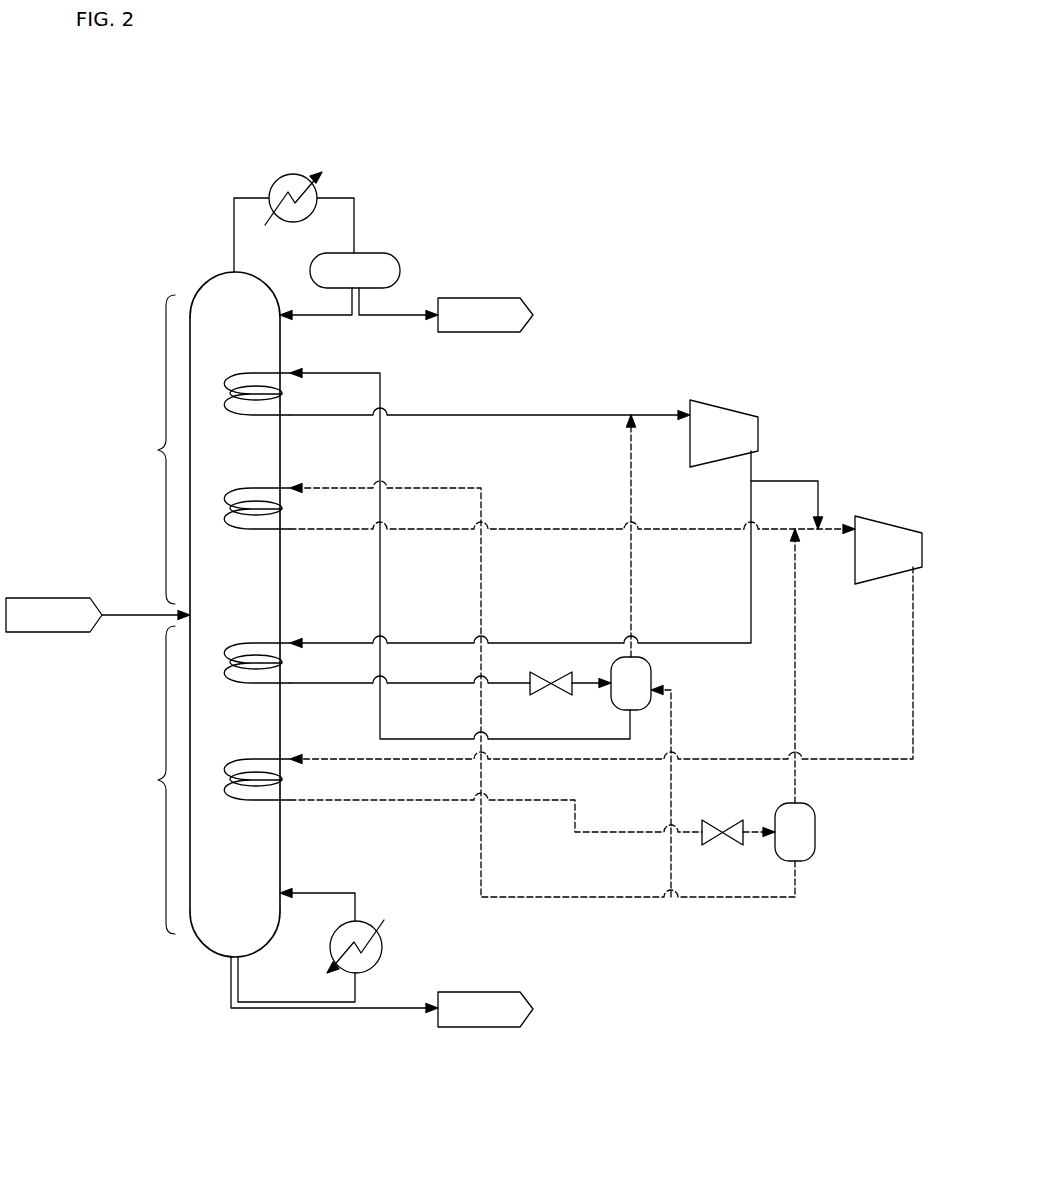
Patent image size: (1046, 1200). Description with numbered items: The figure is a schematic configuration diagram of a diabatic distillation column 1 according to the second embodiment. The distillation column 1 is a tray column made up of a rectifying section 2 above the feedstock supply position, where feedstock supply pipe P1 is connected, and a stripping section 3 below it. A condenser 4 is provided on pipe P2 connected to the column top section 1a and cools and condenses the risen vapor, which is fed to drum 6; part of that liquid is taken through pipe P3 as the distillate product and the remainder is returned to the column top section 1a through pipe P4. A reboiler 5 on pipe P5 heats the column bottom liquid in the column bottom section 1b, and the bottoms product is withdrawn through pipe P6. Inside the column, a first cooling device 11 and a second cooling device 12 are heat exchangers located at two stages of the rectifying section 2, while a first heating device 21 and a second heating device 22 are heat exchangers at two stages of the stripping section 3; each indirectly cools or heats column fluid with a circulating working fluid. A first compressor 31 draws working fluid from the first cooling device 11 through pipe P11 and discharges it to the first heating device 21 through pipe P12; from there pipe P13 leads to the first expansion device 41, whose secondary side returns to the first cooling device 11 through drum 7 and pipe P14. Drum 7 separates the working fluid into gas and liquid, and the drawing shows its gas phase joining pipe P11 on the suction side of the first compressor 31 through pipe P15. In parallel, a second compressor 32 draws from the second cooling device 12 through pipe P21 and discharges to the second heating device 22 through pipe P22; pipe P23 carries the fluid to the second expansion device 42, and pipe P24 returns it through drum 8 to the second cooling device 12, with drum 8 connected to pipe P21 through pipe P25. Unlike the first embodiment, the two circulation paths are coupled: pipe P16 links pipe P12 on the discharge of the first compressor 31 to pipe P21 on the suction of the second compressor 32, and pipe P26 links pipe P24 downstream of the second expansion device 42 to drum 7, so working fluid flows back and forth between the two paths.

The diabatic distillation column 1 is at (692, 172).
The column top section 1a is at (206, 286).
The column bottom section 1b is at (217, 948).
The rectifying section 2 is at (158, 449).
The stripping section 3 is at (158, 780).
The condenser 4 is at (292, 172).
The reboiler 5 is at (383, 947).
The drum 6 is at (403, 270).
The drum 7 is at (652, 672).
The drum 8 is at (816, 830).
The first cooling device 11 is at (256, 426).
The second cooling device 12 is at (256, 541).
The first heating device 21 is at (256, 628).
The second heating device 22 is at (256, 744).
The first compressor 31 is at (722, 398).
The second compressor 32 is at (886, 515).
The first expansion device 41 is at (558, 696).
The second expansion device 42 is at (727, 818).
The feedstock supply pipe P1 is at (130, 612).
The pipe P2 is at (232, 218).
The pipe P3 is at (401, 320).
The pipe P4 is at (325, 320).
The pipe P5 is at (319, 890).
The pipe P6 is at (293, 1012).
The pipe P11 is at (514, 412).
The pipe P12 is at (551, 640).
The pipe P13 is at (426, 690).
The pipe P14 is at (384, 580).
The pipe P15 is at (634, 580).
The pipe P16 is at (801, 478).
The pipe P21 is at (551, 526).
The pipe P22 is at (731, 756).
The pipe P23 is at (396, 804).
The pipe P24 is at (559, 894).
The pipe P25 is at (798, 657).
The pipe P26 is at (667, 797).